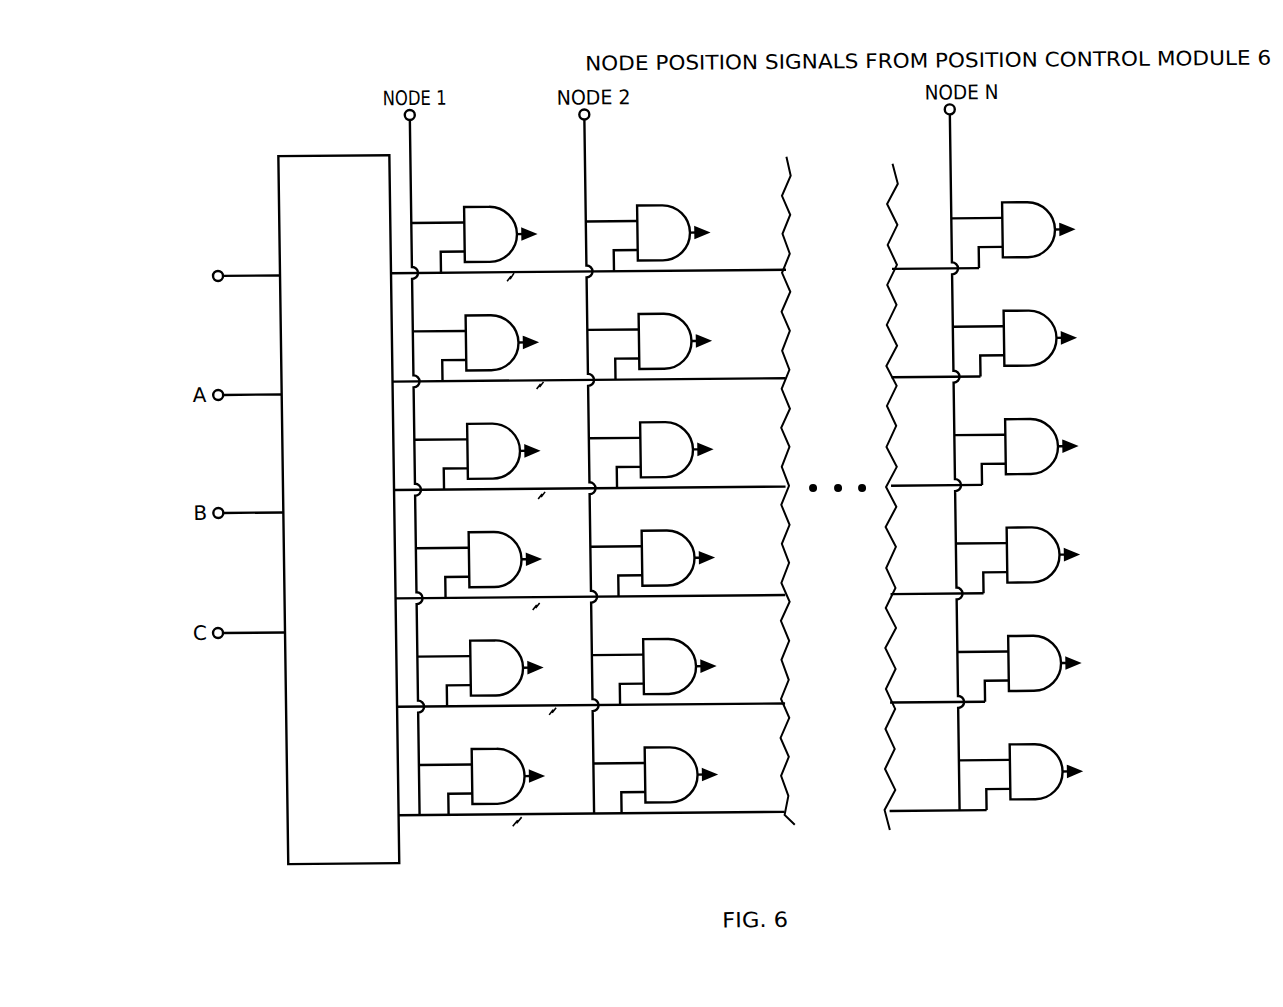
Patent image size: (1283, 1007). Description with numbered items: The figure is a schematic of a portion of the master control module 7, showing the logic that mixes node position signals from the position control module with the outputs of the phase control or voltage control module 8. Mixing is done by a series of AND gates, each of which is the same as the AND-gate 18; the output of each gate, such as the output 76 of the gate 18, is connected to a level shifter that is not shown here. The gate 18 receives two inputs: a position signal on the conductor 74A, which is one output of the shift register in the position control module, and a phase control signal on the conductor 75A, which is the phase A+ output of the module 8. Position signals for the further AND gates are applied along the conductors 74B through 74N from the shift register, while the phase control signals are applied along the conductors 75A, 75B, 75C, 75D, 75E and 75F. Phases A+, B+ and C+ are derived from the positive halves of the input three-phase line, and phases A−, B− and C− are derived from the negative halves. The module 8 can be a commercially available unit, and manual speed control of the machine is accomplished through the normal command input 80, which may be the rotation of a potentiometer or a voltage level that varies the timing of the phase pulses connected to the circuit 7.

The input conductor for position signal 74A is at (440, 463).
The conductor for position signal 74B is at (616, 461).
The conductor for position signal 74N is at (981, 457).
The AND-gate 18 is at (468, 215).
The output of AND-gate 76 is at (536, 217).
The conductor for phase A+ control signal 75A is at (685, 272).
The conductor for phase B+ control signal 75B is at (686, 374).
The conductor for phase C+ control signal 75C is at (688, 483).
The conductor for phase A− control signal 75D is at (689, 592).
The conductor for phase B− control signal 75E is at (691, 698).
The conductor for phase C− control signal 75F is at (692, 808).
The normal command input 80 is at (199, 300).
The phase control or voltage control module 8 is at (304, 510).
The master control module 7 is at (712, 840).